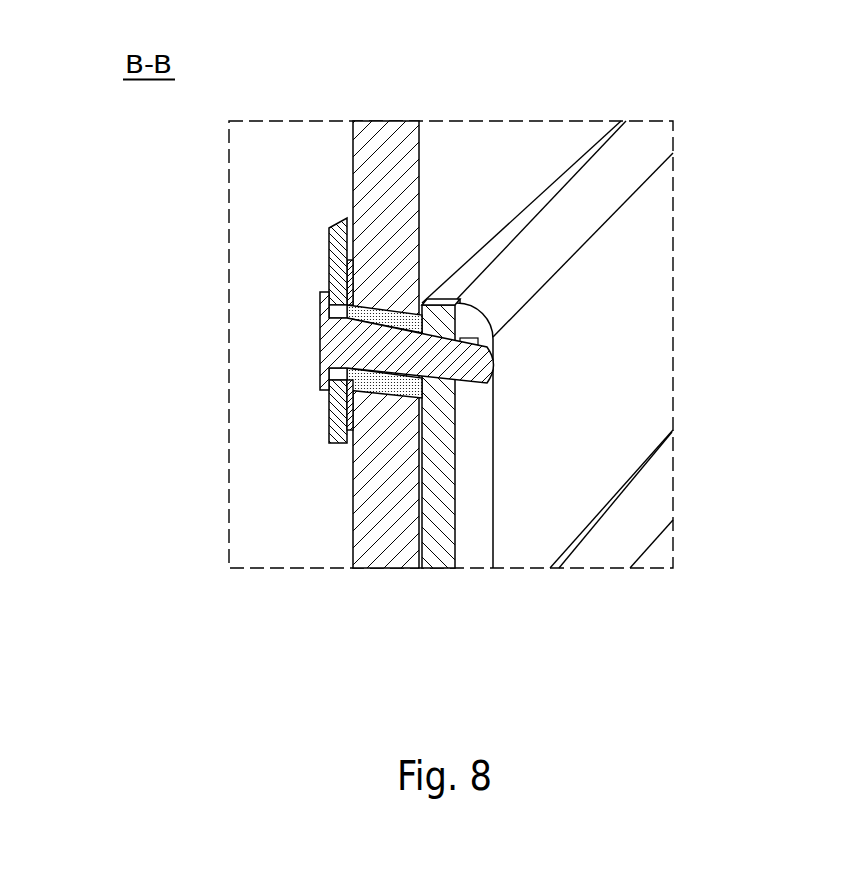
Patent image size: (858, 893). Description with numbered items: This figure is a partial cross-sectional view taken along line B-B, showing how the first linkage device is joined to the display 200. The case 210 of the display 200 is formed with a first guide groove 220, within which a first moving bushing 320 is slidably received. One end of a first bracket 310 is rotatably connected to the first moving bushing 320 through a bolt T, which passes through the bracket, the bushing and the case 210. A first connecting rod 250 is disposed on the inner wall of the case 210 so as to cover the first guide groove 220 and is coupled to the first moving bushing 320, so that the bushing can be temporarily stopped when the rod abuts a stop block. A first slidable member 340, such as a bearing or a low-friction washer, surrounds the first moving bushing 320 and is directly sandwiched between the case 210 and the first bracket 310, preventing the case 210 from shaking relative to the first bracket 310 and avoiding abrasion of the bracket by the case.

The display 200 is at (597, 344).
The case 210 is at (392, 182).
The first guide groove 220 is at (557, 246).
The first connecting rod 250 is at (479, 557).
The first bracket 310 is at (347, 218).
The first moving bushing 320 is at (377, 383).
The first slidable member 340 is at (349, 276).
The bolt T is at (328, 343).